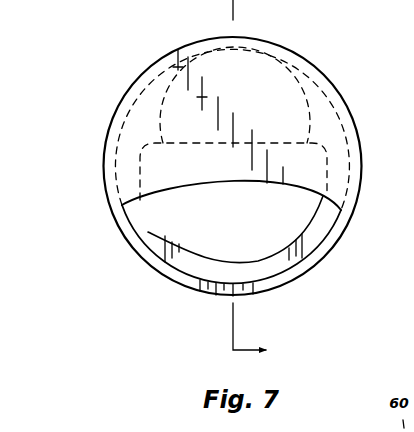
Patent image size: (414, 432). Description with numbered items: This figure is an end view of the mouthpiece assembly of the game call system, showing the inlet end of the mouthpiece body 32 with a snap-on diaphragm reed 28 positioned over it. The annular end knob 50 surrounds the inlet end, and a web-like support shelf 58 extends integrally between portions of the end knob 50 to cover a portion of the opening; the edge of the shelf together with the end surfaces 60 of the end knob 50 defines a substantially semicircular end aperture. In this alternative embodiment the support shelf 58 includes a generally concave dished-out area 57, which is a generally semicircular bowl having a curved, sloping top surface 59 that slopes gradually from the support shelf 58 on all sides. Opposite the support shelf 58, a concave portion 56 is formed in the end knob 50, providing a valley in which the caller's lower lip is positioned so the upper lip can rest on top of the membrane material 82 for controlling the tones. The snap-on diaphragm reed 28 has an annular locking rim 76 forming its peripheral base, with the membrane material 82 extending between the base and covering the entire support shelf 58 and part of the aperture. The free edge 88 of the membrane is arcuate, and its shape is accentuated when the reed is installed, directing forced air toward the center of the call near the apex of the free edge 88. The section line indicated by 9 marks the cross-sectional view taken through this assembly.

The snap-on diaphragm reed 28 is at (330, 80).
The dished-out area 57 is at (297, 124).
The support shelf 58 is at (262, 79).
The sloping top surface 59 is at (150, 146).
The membrane material 82 is at (160, 129).
The end knob 50 is at (160, 209).
The free edge 88 is at (239, 186).
The end surfaces 60 is at (318, 221).
The mouthpiece body 32 is at (246, 254).
The annular locking rim 76 is at (340, 224).
The concave portion 56 is at (200, 279).
The section line 9 is at (265, 332).